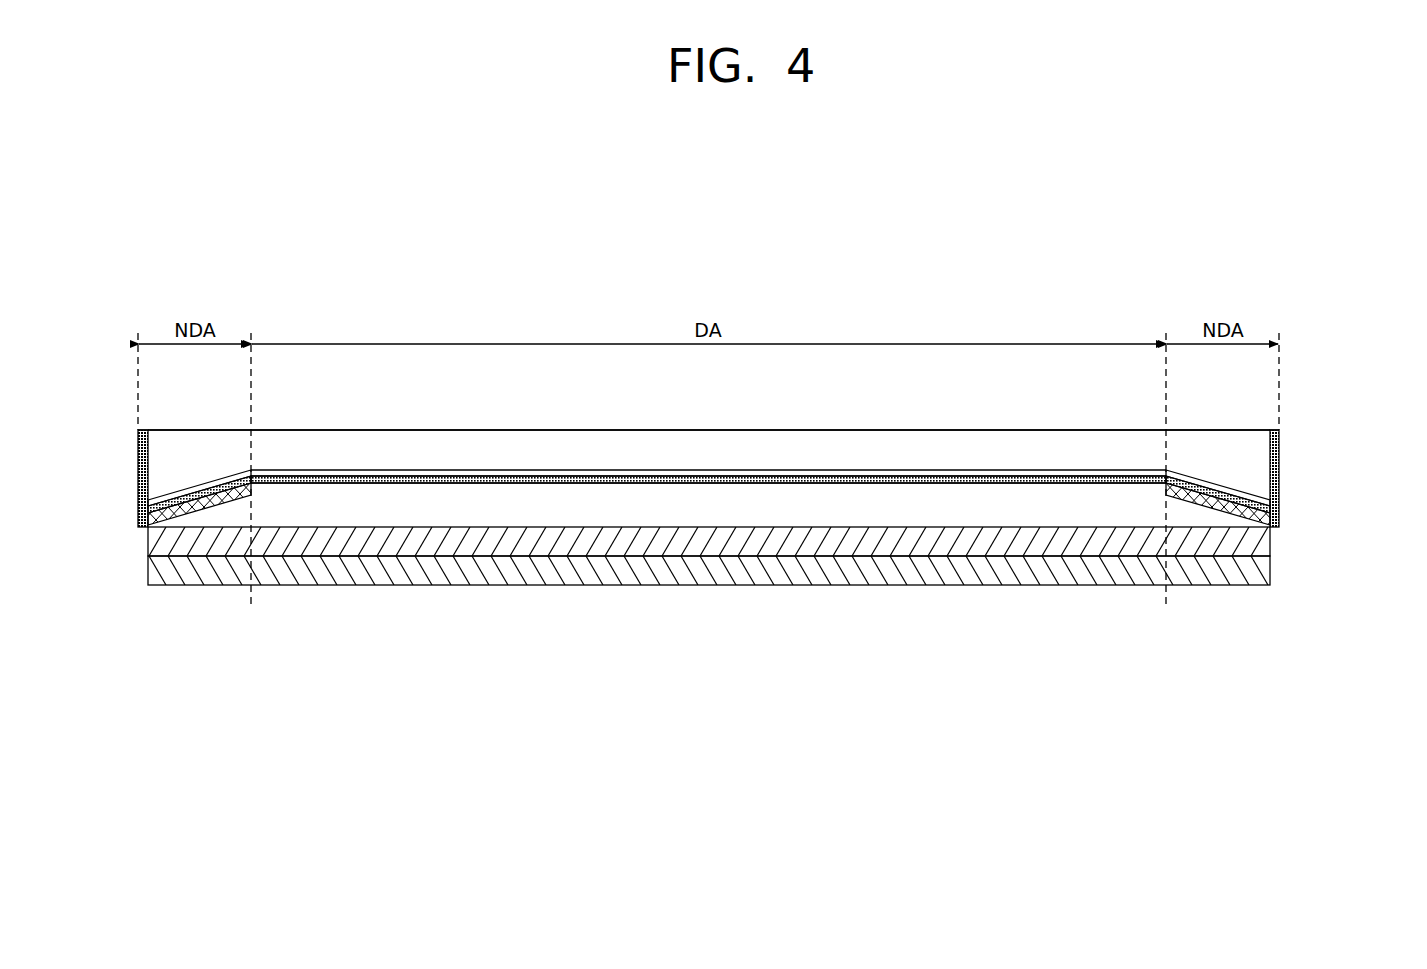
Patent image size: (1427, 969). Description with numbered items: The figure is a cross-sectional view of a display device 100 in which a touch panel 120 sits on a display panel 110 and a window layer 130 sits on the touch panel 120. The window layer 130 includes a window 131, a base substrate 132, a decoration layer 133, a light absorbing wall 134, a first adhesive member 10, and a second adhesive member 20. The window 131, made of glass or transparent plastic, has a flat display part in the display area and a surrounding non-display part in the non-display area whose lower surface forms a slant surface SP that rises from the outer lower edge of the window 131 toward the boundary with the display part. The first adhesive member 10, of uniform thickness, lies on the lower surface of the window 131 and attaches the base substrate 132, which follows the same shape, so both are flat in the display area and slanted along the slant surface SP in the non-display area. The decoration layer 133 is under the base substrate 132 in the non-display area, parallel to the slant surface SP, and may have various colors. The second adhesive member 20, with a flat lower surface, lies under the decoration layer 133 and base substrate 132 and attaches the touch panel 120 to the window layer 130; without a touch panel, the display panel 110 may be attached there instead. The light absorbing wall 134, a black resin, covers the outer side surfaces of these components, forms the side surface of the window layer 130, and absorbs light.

The display device 100 is at (1133, 267).
The first adhesive member 10 is at (585, 477).
The second adhesive member 20 is at (680, 507).
The display panel 110 is at (1255, 573).
The touch panel 120 is at (1255, 545).
The window layer 130 is at (1367, 450).
The window 131 is at (1257, 462).
The base substrate 132 is at (1267, 508).
The decoration layer 133 is at (1262, 526).
The light absorbing wall 134 is at (143, 429).
The slant surface SP is at (195, 480).